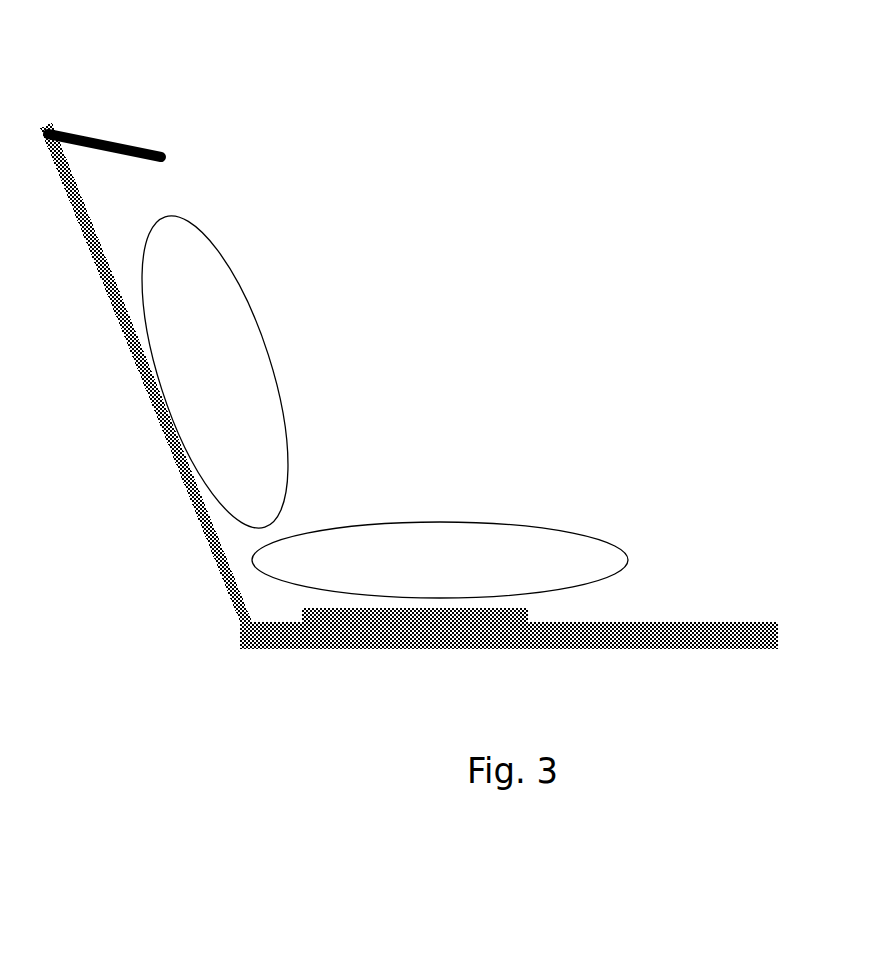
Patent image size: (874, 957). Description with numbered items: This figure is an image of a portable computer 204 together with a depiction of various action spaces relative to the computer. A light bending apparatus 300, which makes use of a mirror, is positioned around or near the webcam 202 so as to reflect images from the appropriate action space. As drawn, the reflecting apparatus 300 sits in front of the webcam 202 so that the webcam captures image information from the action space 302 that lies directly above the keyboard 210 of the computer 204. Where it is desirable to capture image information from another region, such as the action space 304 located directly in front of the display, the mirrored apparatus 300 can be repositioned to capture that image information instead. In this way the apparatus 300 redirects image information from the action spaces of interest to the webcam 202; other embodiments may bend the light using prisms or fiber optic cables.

The webcam 202 is at (73, 170).
The computer 204 is at (760, 628).
The keyboard 210 is at (528, 612).
The light bending apparatus 300 is at (165, 150).
The action space 302 is at (593, 547).
The action space 304 is at (268, 433).